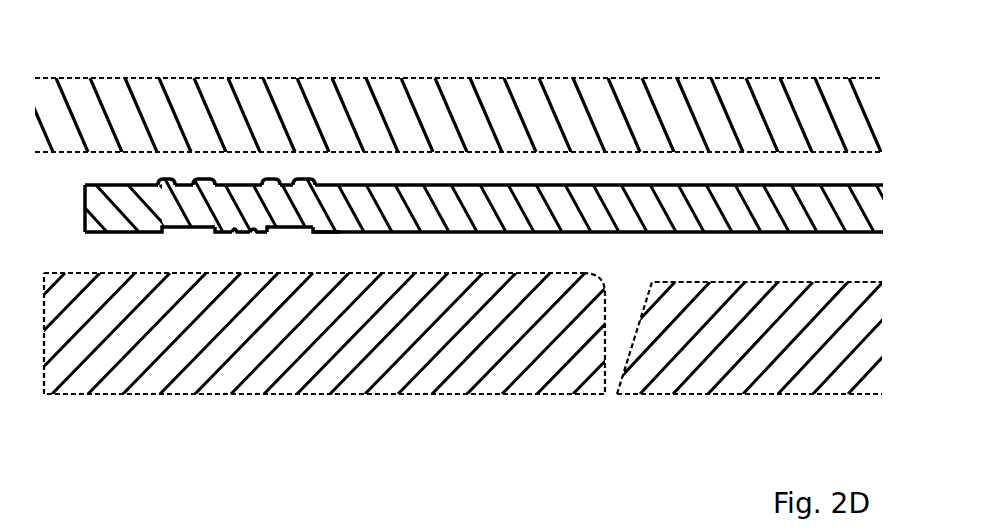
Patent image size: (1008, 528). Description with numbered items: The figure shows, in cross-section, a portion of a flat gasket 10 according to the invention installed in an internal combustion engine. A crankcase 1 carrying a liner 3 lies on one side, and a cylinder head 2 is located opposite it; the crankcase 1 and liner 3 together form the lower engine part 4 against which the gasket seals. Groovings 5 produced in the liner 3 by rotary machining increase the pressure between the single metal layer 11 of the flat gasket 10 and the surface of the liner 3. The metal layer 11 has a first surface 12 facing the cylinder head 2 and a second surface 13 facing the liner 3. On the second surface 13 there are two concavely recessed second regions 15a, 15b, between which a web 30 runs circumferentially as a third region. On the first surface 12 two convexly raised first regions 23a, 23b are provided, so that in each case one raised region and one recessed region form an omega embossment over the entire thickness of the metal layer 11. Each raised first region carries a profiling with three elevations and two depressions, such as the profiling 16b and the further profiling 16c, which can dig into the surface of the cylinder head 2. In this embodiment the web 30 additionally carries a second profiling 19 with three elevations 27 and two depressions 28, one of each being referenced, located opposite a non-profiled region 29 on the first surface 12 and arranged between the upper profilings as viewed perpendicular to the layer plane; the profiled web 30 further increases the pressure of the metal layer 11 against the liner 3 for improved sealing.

The crankcase 1 is at (703, 377).
The cylinder head 2 is at (537, 95).
The liner 3 is at (363, 343).
The substrate 4 is at (476, 346).
The groovings 5 is at (480, 262).
The flat gasket 10 is at (478, 215).
The metal layer 11 is at (772, 218).
The first surface 12 is at (473, 186).
The second surface 13 is at (602, 235).
The second region 15a is at (178, 234).
The second region 15b is at (307, 234).
The profiling 16b is at (280, 179).
The third upper protrusion 16c is at (195, 181).
The second profiling 19 is at (255, 232).
The first region 23a is at (162, 181).
The first region 23b is at (313, 182).
The elevation 27 is at (267, 232).
The depression 28 is at (230, 233).
The lower step edge 29 is at (217, 233).
The web 30 is at (240, 229).